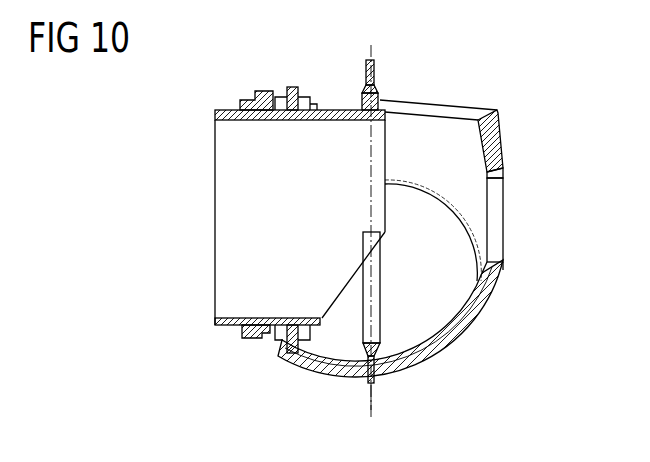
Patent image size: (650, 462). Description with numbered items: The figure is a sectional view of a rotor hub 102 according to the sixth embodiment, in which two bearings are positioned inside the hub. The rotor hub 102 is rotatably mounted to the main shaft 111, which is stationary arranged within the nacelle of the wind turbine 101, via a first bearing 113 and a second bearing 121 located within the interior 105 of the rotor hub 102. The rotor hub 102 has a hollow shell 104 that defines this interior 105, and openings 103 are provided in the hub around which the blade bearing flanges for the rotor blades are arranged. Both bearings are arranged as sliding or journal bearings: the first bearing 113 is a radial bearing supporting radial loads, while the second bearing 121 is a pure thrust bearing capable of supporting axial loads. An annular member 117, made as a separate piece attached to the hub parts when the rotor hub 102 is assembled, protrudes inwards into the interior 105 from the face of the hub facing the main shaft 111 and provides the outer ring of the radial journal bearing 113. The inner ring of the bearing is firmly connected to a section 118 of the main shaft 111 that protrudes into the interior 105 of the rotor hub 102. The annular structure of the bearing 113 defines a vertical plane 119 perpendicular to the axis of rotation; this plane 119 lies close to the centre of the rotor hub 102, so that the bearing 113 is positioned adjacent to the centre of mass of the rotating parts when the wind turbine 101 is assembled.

The wind turbine 101 is at (198, 133).
The rotor hub 102 is at (504, 94).
The openings 103 is at (432, 324).
The hollow shell 104 is at (497, 148).
The interior 105 is at (437, 283).
The main shaft 111 is at (227, 327).
The first bearing 113 is at (386, 96).
The annular member 117 is at (297, 86).
The section of the main shaft 118 is at (270, 341).
The vertical plane 119 is at (372, 398).
The second bearing 121 is at (280, 92).